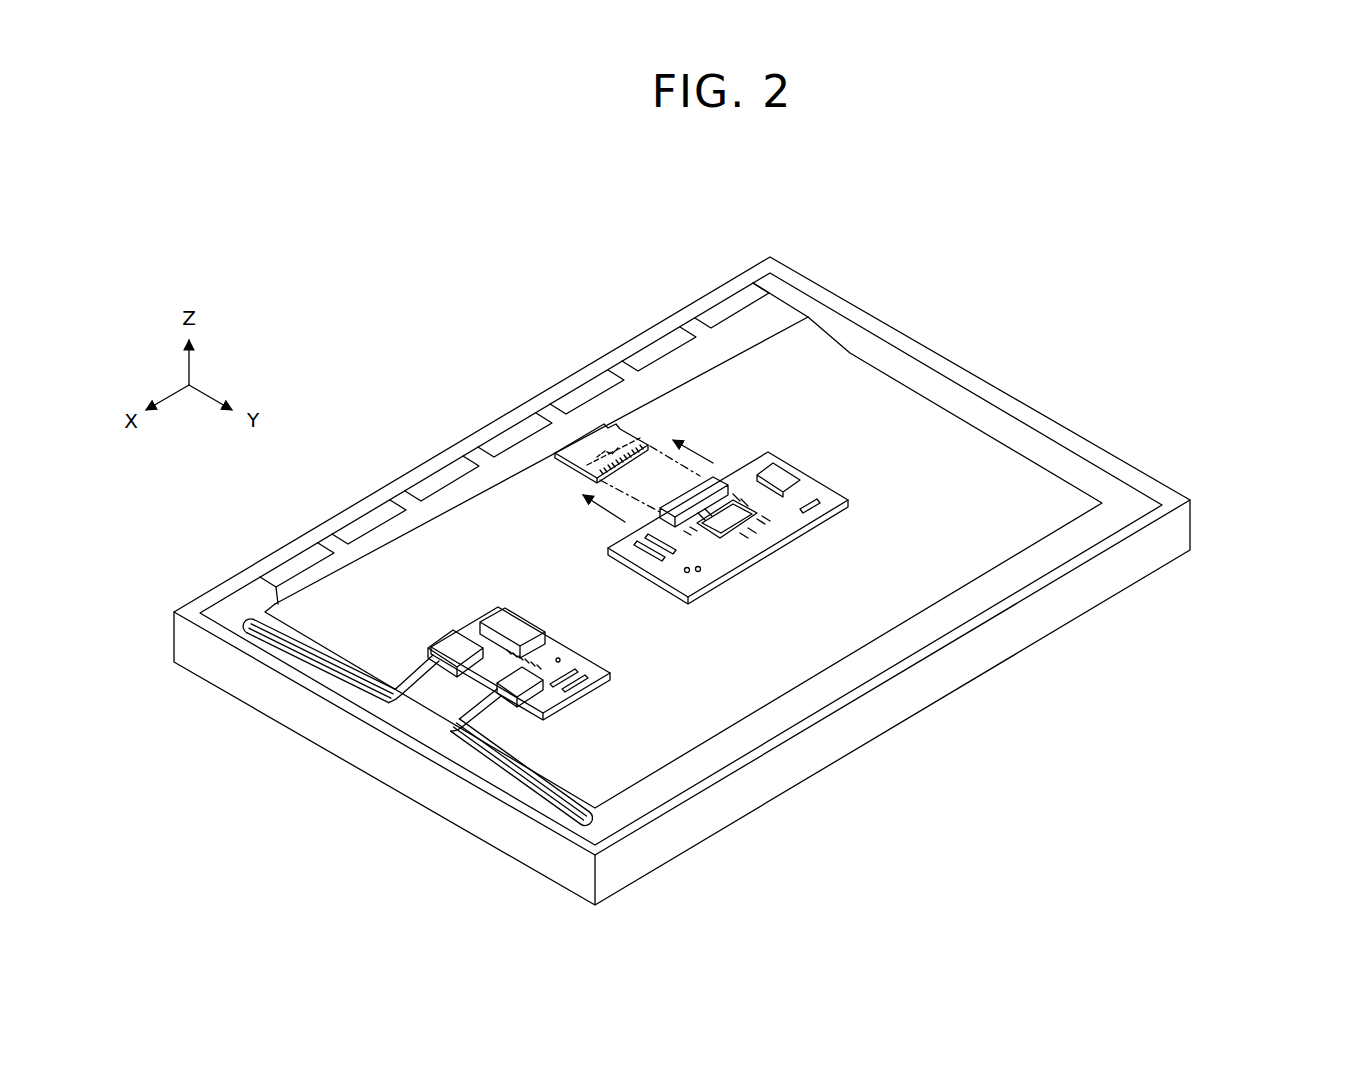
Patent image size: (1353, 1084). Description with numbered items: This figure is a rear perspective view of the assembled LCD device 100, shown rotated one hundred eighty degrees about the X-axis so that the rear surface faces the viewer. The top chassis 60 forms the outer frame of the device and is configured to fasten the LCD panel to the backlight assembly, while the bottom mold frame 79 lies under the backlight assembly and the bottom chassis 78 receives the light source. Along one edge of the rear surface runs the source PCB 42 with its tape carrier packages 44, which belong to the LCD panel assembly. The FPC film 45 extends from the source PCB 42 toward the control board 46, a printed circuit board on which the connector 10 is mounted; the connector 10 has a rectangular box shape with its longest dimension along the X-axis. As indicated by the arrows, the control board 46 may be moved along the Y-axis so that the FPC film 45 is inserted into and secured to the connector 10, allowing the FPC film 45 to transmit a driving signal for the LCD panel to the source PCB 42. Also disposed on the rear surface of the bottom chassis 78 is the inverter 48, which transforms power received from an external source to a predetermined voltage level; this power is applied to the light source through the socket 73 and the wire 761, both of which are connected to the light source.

The LCD device 100 is at (541, 262).
The top chassis 60 is at (1192, 523).
The bottom mold frame 79 is at (1097, 483).
The bottom chassis 78 is at (1030, 475).
The source PCB 42 is at (780, 314).
The tape carrier package 44 is at (715, 312).
The wire 761 is at (352, 694).
The inverter 48 is at (597, 671).
The socket 73 is at (447, 648).
The control board 46 is at (743, 548).
The FPC film 45 is at (583, 450).
The connector 10 is at (677, 478).